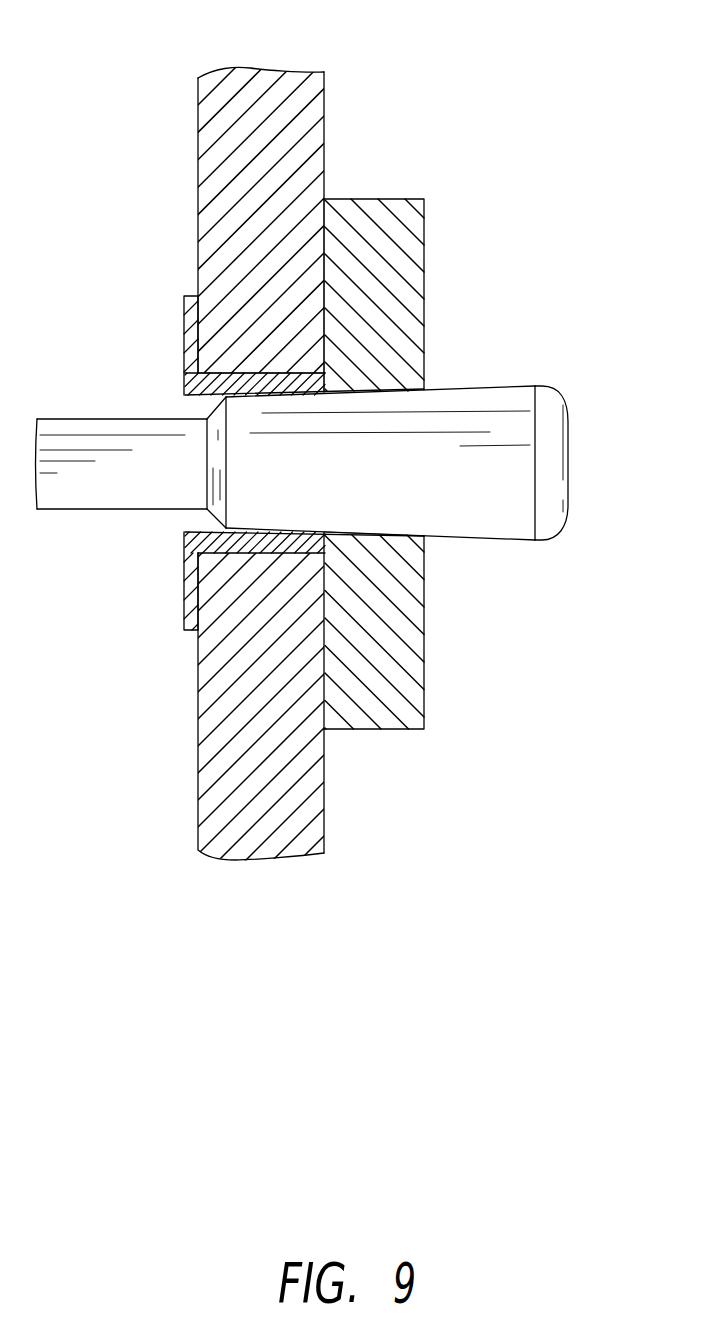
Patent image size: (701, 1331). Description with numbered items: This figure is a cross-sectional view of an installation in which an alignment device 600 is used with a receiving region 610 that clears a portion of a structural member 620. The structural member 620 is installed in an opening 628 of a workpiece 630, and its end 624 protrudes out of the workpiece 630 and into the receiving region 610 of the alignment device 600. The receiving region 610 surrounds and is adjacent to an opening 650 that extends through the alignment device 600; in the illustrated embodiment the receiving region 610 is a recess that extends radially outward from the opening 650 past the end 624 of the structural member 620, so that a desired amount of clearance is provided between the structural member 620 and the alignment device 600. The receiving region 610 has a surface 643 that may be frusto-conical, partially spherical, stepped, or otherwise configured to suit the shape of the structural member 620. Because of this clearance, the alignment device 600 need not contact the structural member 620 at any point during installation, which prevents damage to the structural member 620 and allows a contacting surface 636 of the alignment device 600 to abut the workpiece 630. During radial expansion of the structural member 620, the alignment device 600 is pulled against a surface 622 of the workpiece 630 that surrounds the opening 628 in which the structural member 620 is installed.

The alignment device 600 is at (424, 683).
The receiving region 610 is at (338, 385).
The structural member 620 is at (184, 570).
The surface 622 is at (324, 810).
The end 624 is at (343, 543).
The opening 628 is at (263, 373).
The workpiece 630 is at (277, 70).
The contacting surface 636 is at (325, 262).
The surface 643 is at (270, 387).
The opening 650 is at (390, 390).